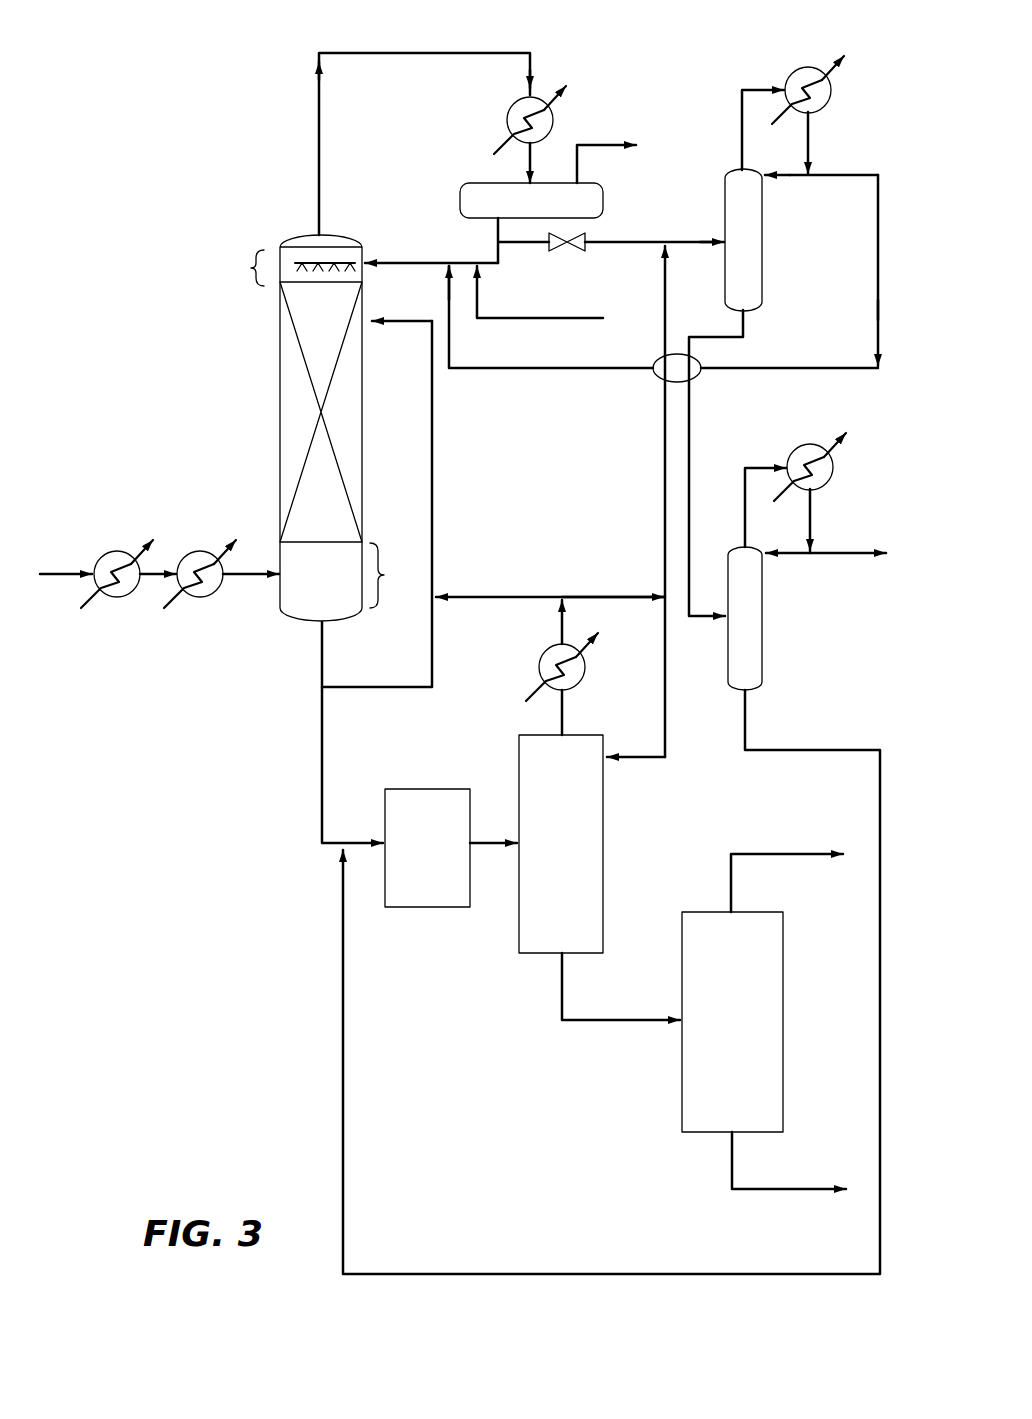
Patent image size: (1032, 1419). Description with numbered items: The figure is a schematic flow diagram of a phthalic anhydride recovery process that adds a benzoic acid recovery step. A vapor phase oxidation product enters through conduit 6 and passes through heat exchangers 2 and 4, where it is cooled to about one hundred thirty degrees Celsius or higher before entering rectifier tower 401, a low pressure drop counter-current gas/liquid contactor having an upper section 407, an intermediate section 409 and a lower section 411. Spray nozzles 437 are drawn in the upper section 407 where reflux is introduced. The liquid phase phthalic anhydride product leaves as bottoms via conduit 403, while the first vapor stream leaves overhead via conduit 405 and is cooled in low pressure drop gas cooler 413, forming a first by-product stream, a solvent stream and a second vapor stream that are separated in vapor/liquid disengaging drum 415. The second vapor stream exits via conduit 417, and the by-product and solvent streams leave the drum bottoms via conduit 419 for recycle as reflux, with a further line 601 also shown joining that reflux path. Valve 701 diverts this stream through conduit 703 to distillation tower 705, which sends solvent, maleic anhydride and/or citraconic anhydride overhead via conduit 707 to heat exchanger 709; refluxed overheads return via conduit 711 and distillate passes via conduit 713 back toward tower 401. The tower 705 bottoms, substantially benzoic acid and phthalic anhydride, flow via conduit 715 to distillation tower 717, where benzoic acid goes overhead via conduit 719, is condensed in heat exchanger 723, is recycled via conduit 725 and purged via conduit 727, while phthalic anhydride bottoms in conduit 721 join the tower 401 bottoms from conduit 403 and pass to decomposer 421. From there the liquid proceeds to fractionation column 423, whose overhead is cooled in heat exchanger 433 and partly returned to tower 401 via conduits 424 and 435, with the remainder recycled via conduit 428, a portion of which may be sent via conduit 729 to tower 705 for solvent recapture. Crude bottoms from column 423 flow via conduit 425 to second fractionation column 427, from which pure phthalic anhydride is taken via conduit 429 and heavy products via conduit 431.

The heat exchanger 2 is at (111, 551).
The heat exchanger 4 is at (194, 551).
The conduit 6 is at (53, 574).
The rectifier tower 401 is at (280, 360).
The conduit 403 is at (322, 655).
The conduit 405 is at (319, 148).
The upper section 407 is at (242, 268).
The intermediate section 409 is at (321, 303).
The lower section 411 is at (396, 575).
The low pressure drop gas cooler 413 is at (517, 101).
The vapor/liquid disengaging drum 415 is at (475, 183).
The conduit 417 is at (600, 143).
The conduit 419 is at (409, 253).
The decomposer 421 is at (420, 789).
The fractionation column 423 is at (585, 735).
The conduit 424 is at (540, 597).
The conduit 425 is at (562, 1000).
The second fractionation column 427 is at (706, 912).
The conduit 428 is at (602, 597).
The conduit 429 is at (778, 854).
The conduit 431 is at (790, 1189).
The heat exchanger 433 is at (539, 660).
The conduit 435 is at (432, 394).
The spray nozzles 437 is at (353, 268).
The feed line 601 is at (545, 320).
The valve 701 is at (566, 255).
The conduit 703 is at (633, 246).
The distillation tower 705 is at (725, 188).
The conduit 707 is at (742, 133).
The heat exchanger 709 is at (807, 69).
The conduit 711 is at (790, 178).
The conduit 713 is at (847, 173).
The conduit 715 is at (695, 334).
The distillation tower 717 is at (762, 650).
The conduit 719 is at (744, 480).
The conduit 721 is at (818, 750).
The heat exchanger 723 is at (808, 444).
The conduit 725 is at (793, 556).
The conduit 727 is at (844, 552).
The conduit 729 is at (665, 478).